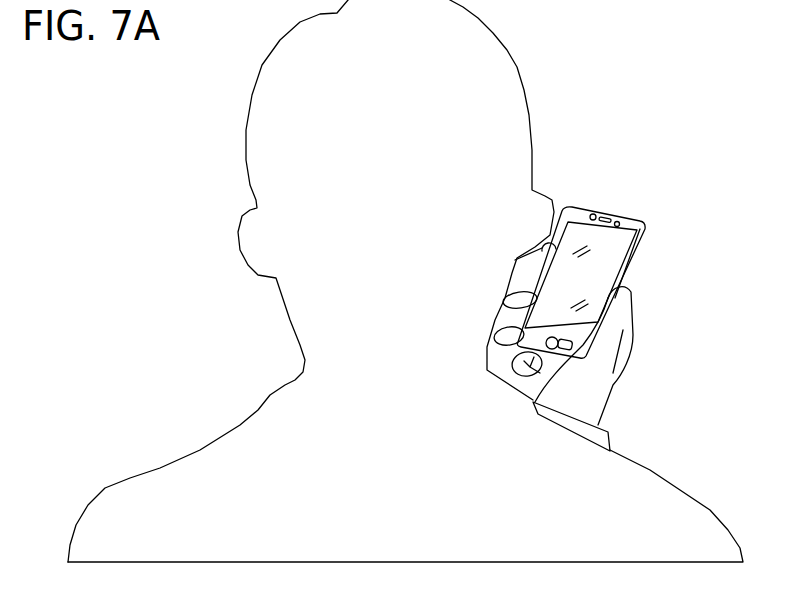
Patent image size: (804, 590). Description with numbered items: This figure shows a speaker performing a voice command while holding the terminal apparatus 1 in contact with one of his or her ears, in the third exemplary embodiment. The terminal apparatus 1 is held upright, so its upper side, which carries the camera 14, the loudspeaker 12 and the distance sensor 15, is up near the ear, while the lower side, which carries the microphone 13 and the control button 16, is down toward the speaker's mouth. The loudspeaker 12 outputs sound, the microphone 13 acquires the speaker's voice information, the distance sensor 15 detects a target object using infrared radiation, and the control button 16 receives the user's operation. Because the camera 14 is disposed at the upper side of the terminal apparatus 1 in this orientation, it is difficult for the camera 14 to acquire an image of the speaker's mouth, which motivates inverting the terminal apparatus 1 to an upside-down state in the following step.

The terminal apparatus 1 is at (662, 220).
The loudspeaker 12 is at (606, 216).
The microphone 13 is at (568, 349).
The camera 14 is at (593, 213).
The distance sensor 15 is at (619, 221).
The control button 16 is at (559, 342).